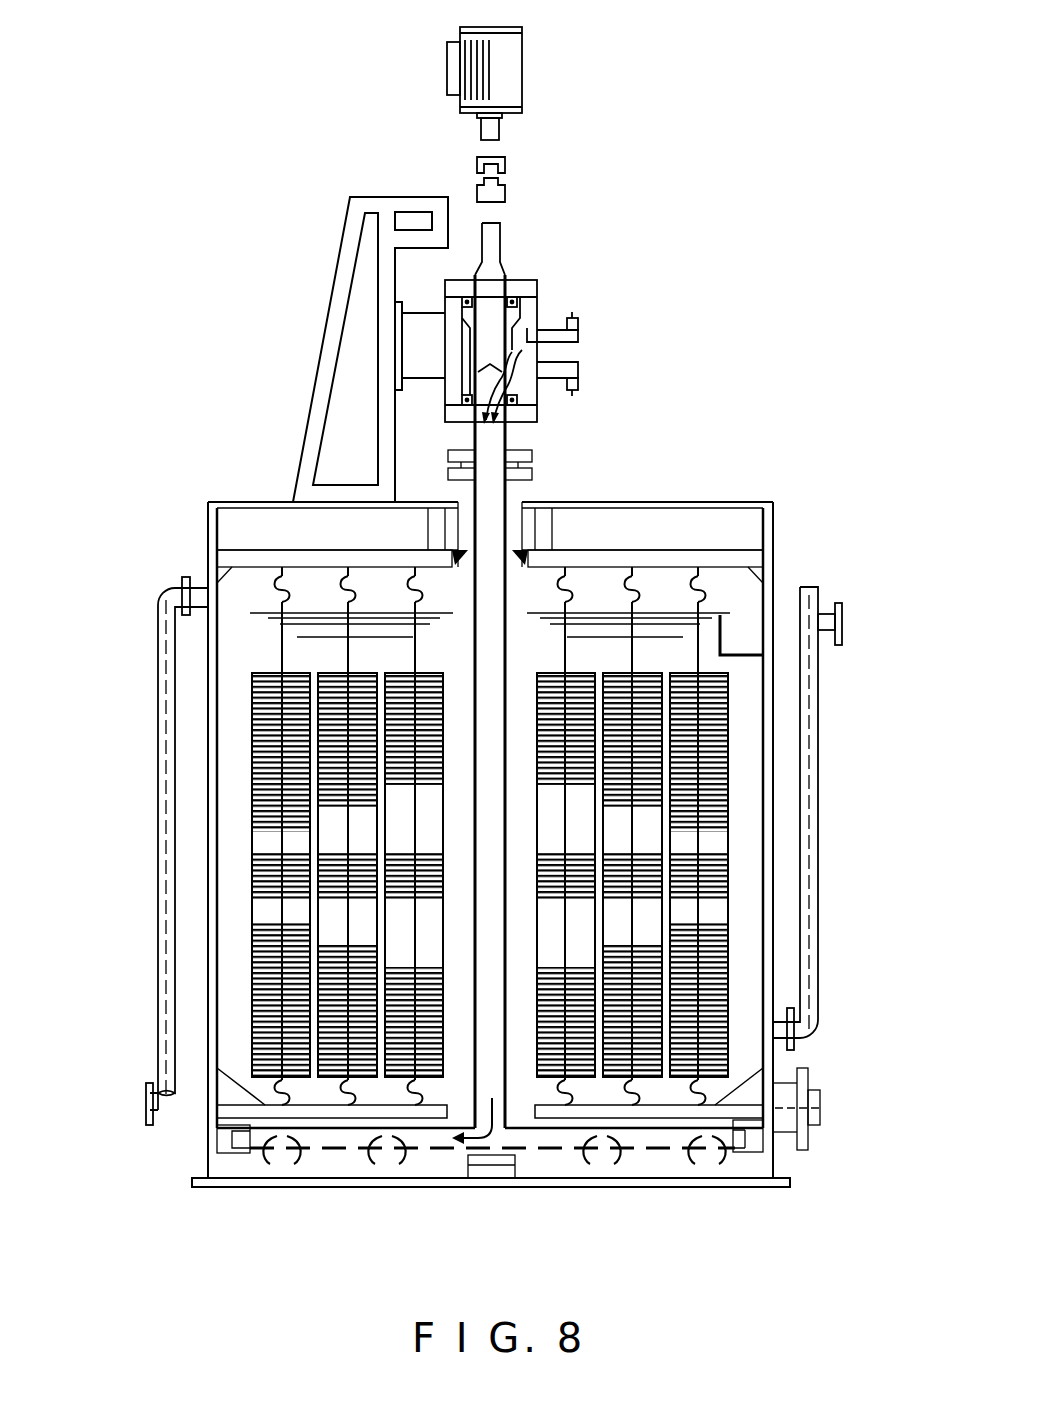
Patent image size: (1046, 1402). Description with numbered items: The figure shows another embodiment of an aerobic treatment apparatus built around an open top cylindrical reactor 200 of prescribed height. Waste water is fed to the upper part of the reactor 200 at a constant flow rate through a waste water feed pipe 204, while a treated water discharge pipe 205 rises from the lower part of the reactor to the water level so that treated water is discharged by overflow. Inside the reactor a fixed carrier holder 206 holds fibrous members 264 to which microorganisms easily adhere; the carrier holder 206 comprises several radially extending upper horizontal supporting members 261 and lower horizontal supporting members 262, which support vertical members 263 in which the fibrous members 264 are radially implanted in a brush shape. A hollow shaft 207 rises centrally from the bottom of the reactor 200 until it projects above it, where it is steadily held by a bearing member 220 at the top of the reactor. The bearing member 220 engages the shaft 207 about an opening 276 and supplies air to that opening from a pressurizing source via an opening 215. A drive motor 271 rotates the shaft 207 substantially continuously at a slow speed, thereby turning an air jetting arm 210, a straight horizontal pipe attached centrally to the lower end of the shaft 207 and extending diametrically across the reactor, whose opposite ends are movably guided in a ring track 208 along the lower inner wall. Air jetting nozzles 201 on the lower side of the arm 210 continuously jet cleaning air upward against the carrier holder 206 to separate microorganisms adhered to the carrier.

The reactor 200 is at (808, 540).
The air jetting nozzles 201 is at (650, 1150).
The waste water feed pipe 204 is at (165, 795).
The treated water discharge pipe 205 is at (820, 685).
The fixed carrier holder 206 is at (254, 525).
The shaft 207 is at (503, 598).
The ring track 208 is at (255, 1136).
The air jetting arm 210 is at (535, 1140).
The opening 215 is at (560, 348).
The bearing member 220 is at (520, 315).
The upper horizontal supporting members 261 is at (670, 560).
The lower horizontal supporting members 262 is at (735, 1110).
The vertical members 263 is at (282, 658).
The fibrous members 264 is at (255, 730).
The drive motor 271 is at (508, 72).
The opening 276 is at (545, 403).